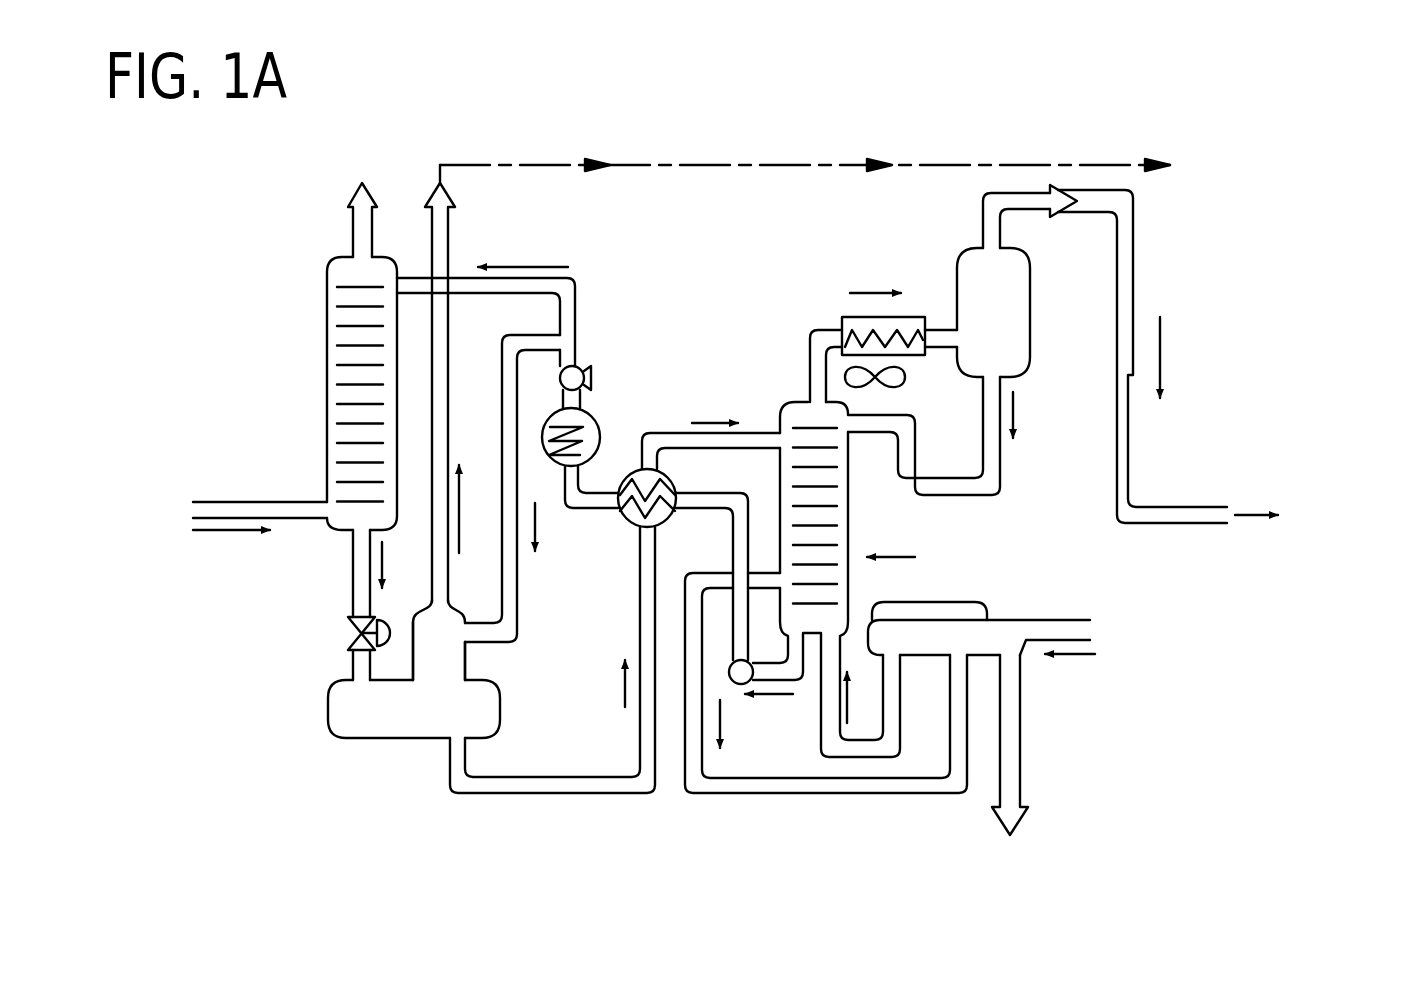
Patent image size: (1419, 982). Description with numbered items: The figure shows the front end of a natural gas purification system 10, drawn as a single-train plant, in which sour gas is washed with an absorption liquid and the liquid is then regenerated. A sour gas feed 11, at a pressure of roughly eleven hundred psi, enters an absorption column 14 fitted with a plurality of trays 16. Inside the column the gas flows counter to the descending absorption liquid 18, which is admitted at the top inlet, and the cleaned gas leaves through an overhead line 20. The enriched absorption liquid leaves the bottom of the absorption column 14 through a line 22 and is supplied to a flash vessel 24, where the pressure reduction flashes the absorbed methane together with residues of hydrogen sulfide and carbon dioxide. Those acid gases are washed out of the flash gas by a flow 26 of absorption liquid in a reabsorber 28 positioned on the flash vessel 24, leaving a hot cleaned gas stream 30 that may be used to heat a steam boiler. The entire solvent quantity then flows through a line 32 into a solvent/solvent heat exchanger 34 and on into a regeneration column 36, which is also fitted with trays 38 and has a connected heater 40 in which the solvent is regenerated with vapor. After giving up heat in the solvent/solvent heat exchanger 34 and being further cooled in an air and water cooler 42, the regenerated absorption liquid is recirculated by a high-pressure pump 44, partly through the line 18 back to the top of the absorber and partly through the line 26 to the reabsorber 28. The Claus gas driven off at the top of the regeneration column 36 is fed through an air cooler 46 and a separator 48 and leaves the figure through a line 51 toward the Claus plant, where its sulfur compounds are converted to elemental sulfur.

The natural gas purification system 10 is at (543, 126).
The sour gas feed 11 is at (262, 502).
The absorption column 14 is at (327, 303).
The trays 16 is at (343, 385).
The absorption liquid 18 is at (578, 292).
The overhead line 20 is at (353, 235).
The line 22 is at (350, 578).
The flash vessel 24 is at (362, 742).
The flow of absorption liquid 26 is at (515, 580).
The reabsorber 28 is at (467, 660).
The hot cleaned gas stream 30 is at (452, 235).
The line 32 is at (608, 795).
The solvent/solvent heat exchanger 34 is at (618, 515).
The regeneration column 36 is at (848, 450).
The trays 38 is at (830, 548).
The heater 40 is at (960, 602).
The air and water cooler 42 is at (598, 413).
The high-pressure pump 44 is at (590, 372).
The air cooler 46 is at (840, 320).
The separator 48 is at (1030, 300).
The line 51 is at (1027, 193).